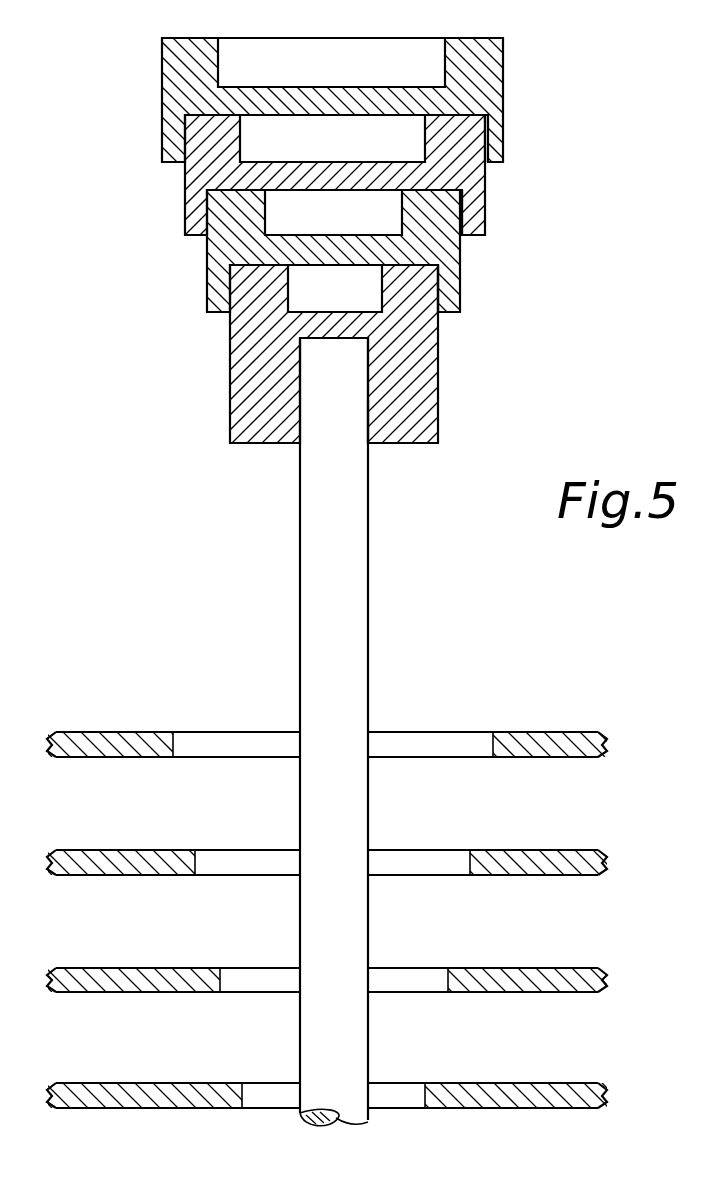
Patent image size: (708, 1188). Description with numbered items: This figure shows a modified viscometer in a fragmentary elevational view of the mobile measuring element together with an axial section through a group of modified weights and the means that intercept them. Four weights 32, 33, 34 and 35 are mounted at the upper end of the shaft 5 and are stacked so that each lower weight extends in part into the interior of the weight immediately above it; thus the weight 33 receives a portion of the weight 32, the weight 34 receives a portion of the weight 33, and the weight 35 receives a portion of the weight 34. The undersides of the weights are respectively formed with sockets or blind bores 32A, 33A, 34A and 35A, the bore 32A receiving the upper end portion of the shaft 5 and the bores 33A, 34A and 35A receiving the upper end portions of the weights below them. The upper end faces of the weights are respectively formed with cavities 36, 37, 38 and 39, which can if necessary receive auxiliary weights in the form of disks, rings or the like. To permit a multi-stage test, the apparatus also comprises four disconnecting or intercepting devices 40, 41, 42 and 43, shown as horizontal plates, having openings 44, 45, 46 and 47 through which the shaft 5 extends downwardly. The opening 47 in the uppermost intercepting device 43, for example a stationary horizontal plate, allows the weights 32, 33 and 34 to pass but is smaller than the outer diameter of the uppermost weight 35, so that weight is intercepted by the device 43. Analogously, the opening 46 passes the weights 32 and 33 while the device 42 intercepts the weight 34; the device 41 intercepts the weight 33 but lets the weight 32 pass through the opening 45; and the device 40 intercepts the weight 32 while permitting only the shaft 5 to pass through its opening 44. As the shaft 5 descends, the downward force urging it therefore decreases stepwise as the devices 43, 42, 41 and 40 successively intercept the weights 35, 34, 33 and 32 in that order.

The shaft 5 is at (340, 565).
The weight 32 is at (408, 384).
The blind bore 32A is at (388, 416).
The weight 33 is at (432, 248).
The blind bore 33A is at (440, 287).
The weight 34 is at (452, 176).
The blind bore 34A is at (462, 217).
The weight 35 is at (473, 93).
The blind bore 35A is at (487, 136).
The cavity 36 is at (312, 297).
The cavity 37 is at (283, 222).
The cavity 38 is at (262, 145).
The cavity 39 is at (232, 62).
The intercepting device 40 is at (588, 1085).
The intercepting device 41 is at (588, 969).
The intercepting device 42 is at (590, 851).
The intercepting device 43 is at (586, 733).
The opening 44 is at (424, 1094).
The opening 45 is at (442, 978).
The opening 46 is at (458, 860).
The opening 47 is at (485, 742).